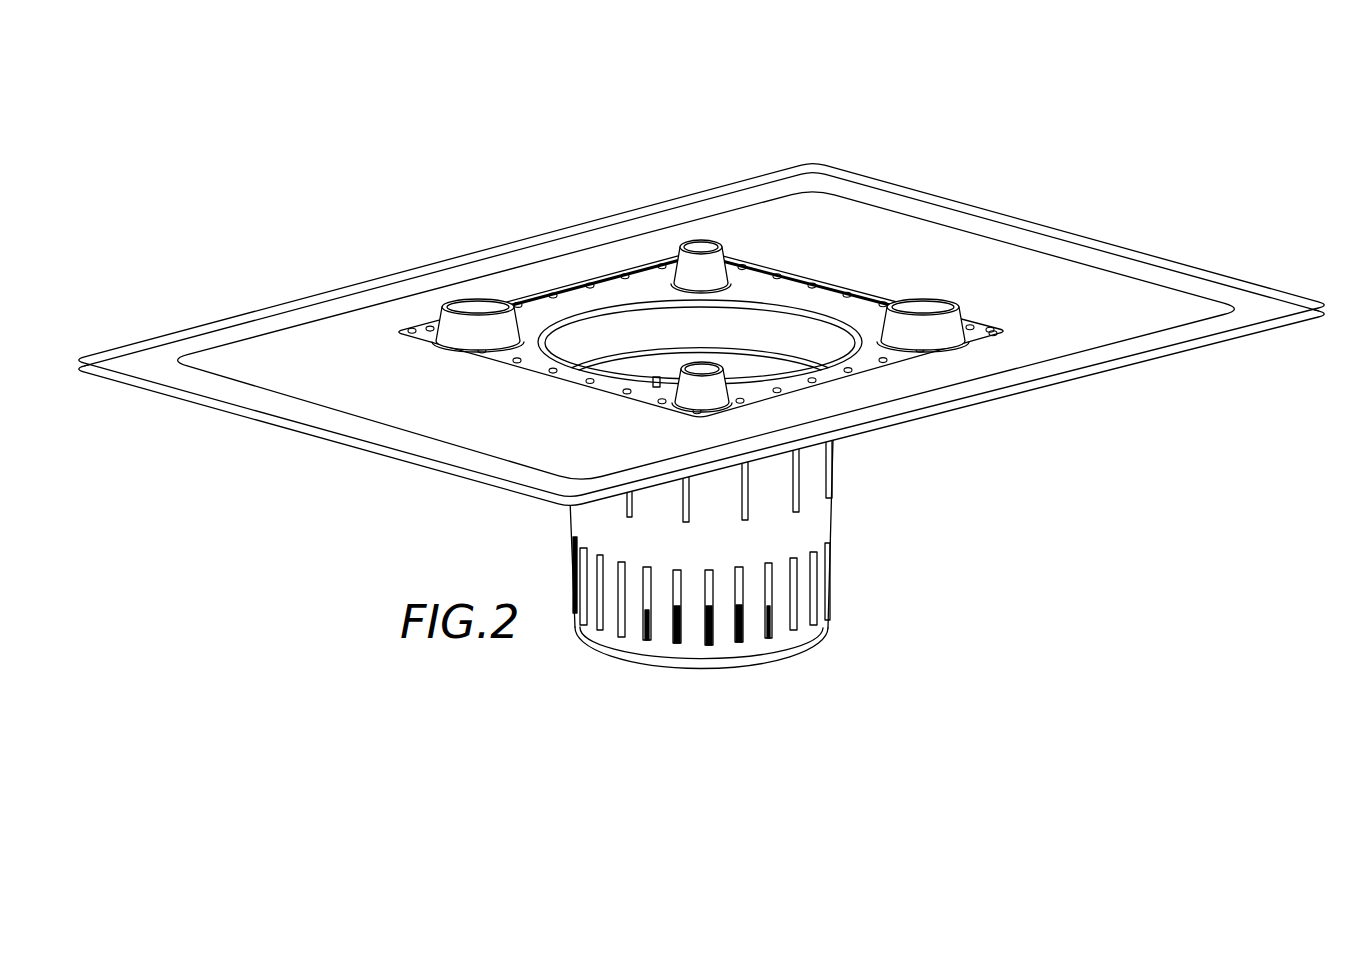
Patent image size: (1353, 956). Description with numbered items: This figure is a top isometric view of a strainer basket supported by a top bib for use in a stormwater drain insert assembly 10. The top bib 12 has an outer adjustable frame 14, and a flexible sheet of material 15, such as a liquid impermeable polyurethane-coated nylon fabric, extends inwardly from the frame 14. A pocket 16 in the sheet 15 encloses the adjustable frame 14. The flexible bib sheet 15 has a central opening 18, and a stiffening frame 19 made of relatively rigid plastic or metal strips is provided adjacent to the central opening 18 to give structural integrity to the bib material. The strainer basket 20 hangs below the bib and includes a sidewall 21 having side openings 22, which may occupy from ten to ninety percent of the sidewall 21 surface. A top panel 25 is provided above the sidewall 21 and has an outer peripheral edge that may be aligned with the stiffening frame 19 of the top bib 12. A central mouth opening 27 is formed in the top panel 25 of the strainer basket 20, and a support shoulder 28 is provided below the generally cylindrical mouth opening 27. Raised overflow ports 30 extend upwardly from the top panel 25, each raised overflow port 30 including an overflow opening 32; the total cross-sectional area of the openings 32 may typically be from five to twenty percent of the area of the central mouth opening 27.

The stormwater drain insert assembly 10 is at (512, 155).
The top bib 12 is at (278, 348).
The outer adjustable frame 14 is at (110, 383).
The flexible sheet of material 15 is at (323, 327).
The pocket 16 is at (137, 358).
The central opening 18 is at (587, 286).
The stiffening frame 19 is at (537, 298).
The strainer basket 20 is at (836, 523).
The sidewall 21 is at (588, 522).
The side openings 22 is at (620, 563).
The top panel 25 is at (858, 318).
The central mouth opening 27 is at (825, 337).
The support shoulder 28 is at (750, 353).
The raised overflow ports 30 is at (712, 266).
The overflow opening 32 is at (477, 304).